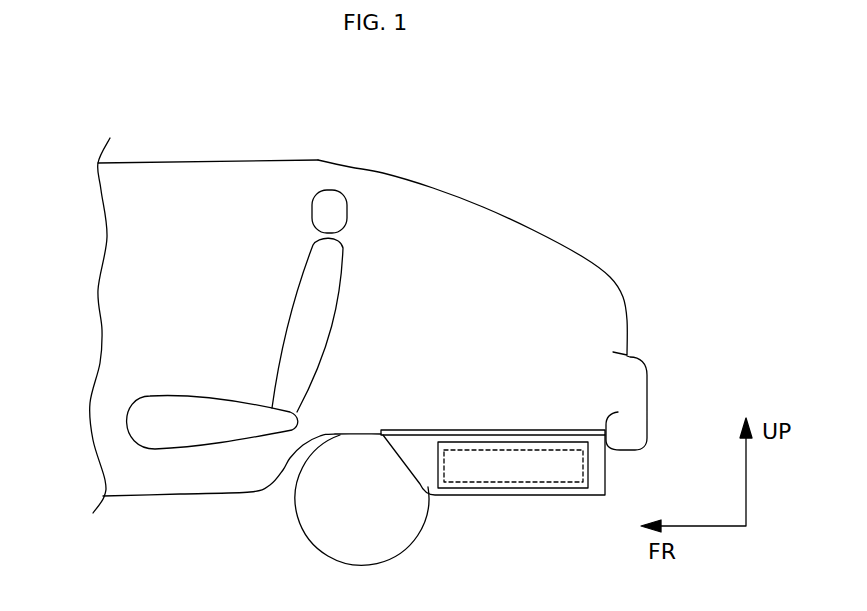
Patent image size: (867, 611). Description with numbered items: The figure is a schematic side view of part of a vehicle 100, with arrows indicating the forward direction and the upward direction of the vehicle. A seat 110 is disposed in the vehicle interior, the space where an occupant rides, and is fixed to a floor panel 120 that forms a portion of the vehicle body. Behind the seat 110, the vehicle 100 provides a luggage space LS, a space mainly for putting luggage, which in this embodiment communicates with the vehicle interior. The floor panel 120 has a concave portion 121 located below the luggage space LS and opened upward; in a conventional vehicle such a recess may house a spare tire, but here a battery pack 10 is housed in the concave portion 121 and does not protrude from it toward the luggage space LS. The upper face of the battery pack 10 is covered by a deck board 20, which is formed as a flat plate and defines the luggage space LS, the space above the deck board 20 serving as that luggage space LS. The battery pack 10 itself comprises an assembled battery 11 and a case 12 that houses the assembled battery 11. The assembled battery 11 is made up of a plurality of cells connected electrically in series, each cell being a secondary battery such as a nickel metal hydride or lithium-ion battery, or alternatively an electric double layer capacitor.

The vehicle 100 is at (203, 150).
The seat 110 is at (308, 292).
The floor panel 120 is at (199, 494).
The concave portion 121 is at (577, 497).
The deck board 20 is at (462, 430).
The battery pack 10 is at (513, 519).
The assembled battery 11 is at (505, 488).
The case 12 is at (468, 488).
The luggage space LS is at (525, 345).